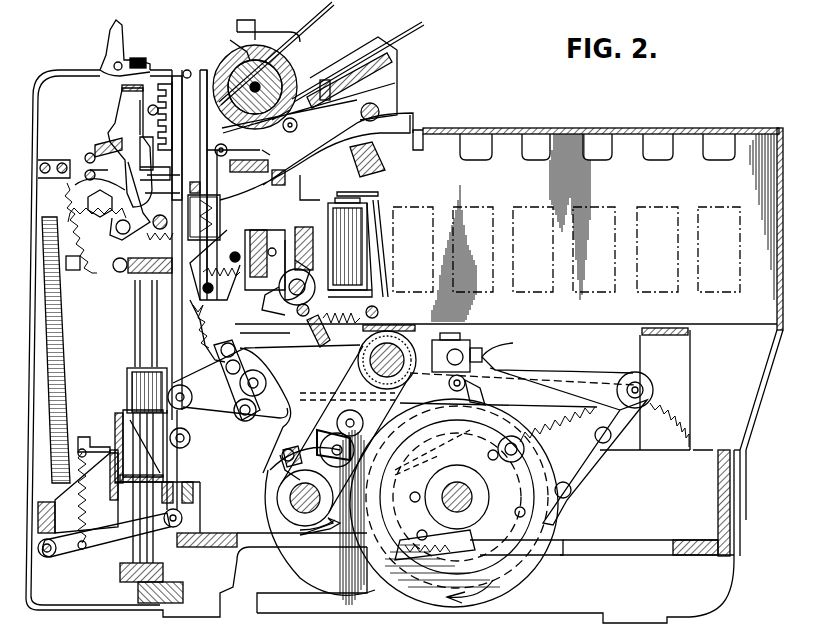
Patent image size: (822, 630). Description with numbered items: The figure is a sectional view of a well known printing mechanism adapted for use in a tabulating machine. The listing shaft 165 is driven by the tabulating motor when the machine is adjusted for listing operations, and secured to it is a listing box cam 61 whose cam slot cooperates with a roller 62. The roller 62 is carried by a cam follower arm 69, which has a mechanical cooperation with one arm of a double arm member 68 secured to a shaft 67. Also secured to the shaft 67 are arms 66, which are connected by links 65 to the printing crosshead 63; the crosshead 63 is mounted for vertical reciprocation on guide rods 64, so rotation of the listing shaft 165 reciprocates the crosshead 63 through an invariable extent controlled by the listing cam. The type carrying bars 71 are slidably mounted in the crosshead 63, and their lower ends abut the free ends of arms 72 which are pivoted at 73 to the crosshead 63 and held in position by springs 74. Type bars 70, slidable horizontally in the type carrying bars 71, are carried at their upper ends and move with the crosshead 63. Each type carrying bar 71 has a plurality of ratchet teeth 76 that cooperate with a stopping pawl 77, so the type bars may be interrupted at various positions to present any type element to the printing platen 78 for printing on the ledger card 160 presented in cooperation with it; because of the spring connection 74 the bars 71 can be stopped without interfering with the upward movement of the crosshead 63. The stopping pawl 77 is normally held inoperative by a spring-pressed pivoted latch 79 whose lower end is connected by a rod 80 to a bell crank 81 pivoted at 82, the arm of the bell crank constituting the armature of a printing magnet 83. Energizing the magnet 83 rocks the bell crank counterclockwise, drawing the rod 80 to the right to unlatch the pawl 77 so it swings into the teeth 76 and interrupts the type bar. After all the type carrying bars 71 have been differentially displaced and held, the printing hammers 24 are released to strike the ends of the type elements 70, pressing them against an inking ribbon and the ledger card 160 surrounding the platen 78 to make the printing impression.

The printing hammers 24 is at (118, 117).
The type bars 70 is at (203, 100).
The printing platen 78 is at (286, 70).
The ledger card 160 is at (420, 28).
The pivot of bell crank 82 is at (383, 195).
The printing magnet 83 is at (345, 225).
The bell crank 81 is at (375, 243).
The spring-pressed pivoted latch 79 is at (200, 263).
The stopping pawl 77 is at (226, 222).
The rod 80 is at (312, 300).
The shaft 67 is at (389, 352).
The cam follower arm 69 is at (452, 315).
The guide rods 64 is at (134, 352).
The ratchet teeth 76 is at (208, 350).
The arms 66 is at (310, 355).
The printing crosshead 63 is at (123, 443).
The links 65 is at (197, 423).
The type carrying bars 71 is at (178, 467).
The double arm member 68 is at (392, 440).
The roller 62 is at (488, 435).
The listing shaft 165 is at (462, 490).
The listing box cam 61 is at (533, 570).
The springs 74 is at (86, 527).
The pivot 73 is at (48, 558).
The arms 72 is at (107, 545).